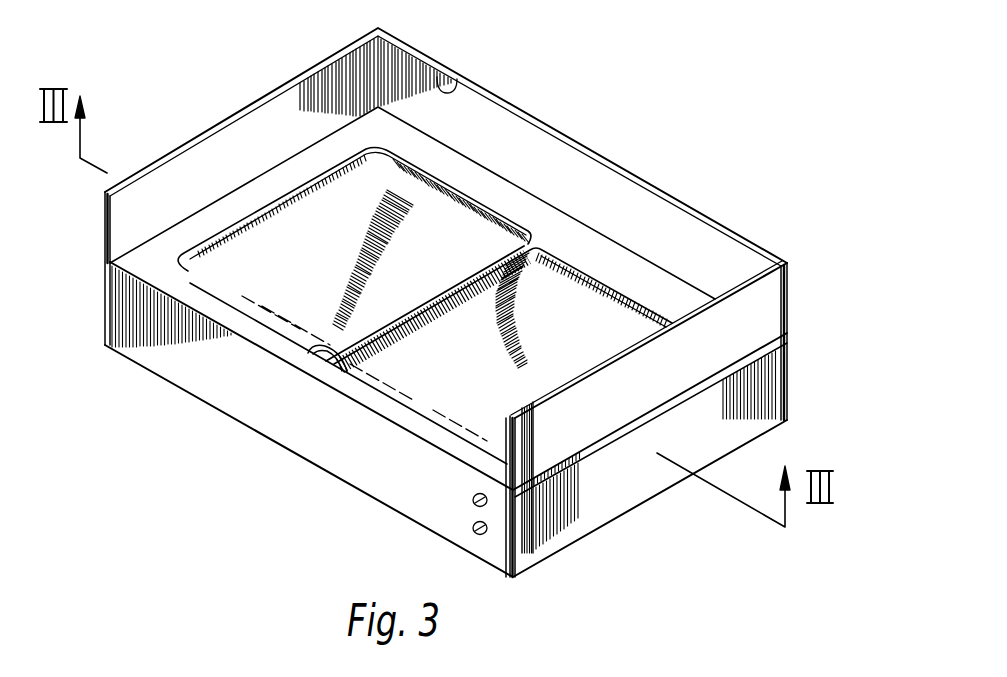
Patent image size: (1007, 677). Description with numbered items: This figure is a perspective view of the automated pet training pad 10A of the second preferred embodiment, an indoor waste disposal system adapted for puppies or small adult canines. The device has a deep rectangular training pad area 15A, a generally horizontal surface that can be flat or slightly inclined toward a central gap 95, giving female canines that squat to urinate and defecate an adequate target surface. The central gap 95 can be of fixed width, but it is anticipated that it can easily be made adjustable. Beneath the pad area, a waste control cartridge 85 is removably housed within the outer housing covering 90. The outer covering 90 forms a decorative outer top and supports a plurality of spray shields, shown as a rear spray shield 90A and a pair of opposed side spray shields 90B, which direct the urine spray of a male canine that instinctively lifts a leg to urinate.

The automated pet training pad 10A is at (703, 82).
The training pad area 15A is at (437, 207).
The waste control cartridge 85 is at (588, 492).
The outer housing covering 90 is at (173, 358).
The rear spray shield 90A is at (440, 67).
The side spray shields 90B is at (230, 140).
The central gap 95 is at (525, 240).